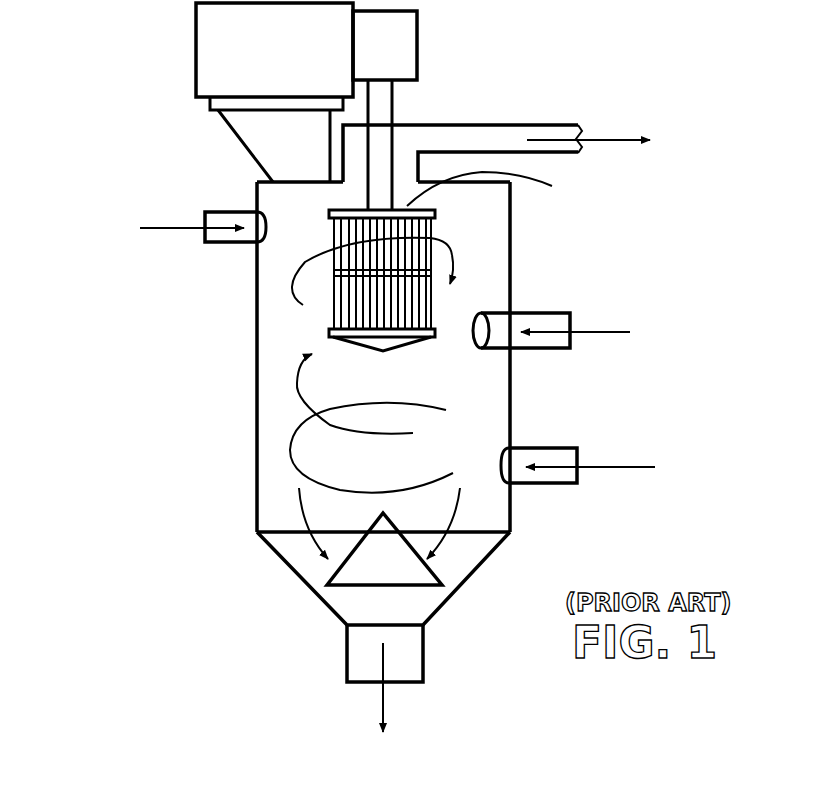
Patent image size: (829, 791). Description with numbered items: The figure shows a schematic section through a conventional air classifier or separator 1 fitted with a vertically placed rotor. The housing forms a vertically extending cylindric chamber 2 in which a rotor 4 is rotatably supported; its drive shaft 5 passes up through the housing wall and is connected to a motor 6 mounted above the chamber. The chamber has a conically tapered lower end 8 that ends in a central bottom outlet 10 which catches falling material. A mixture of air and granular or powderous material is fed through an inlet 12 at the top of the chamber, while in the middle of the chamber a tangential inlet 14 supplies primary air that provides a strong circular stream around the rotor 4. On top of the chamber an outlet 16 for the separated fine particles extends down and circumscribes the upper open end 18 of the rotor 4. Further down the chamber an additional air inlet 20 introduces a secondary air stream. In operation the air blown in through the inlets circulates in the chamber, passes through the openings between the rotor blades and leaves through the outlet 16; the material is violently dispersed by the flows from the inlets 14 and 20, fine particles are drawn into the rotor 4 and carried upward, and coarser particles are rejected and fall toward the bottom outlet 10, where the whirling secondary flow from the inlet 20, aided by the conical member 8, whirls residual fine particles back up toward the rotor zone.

The cyclone separator apparatus 1 is at (536, 240).
The cylindric chamber 2 is at (275, 336).
The rotor 4 is at (437, 310).
The drive shaft 5 is at (383, 106).
The motor 6 is at (218, 44).
The conically tapered lower end 8 is at (284, 557).
The bottom outlet 10 is at (347, 648).
The inlet 12 is at (221, 212).
The tangential inlet 14 is at (540, 350).
The outlet 16 is at (517, 124).
The upper open end 18 is at (499, 189).
The additional air inlet 20 is at (544, 485).